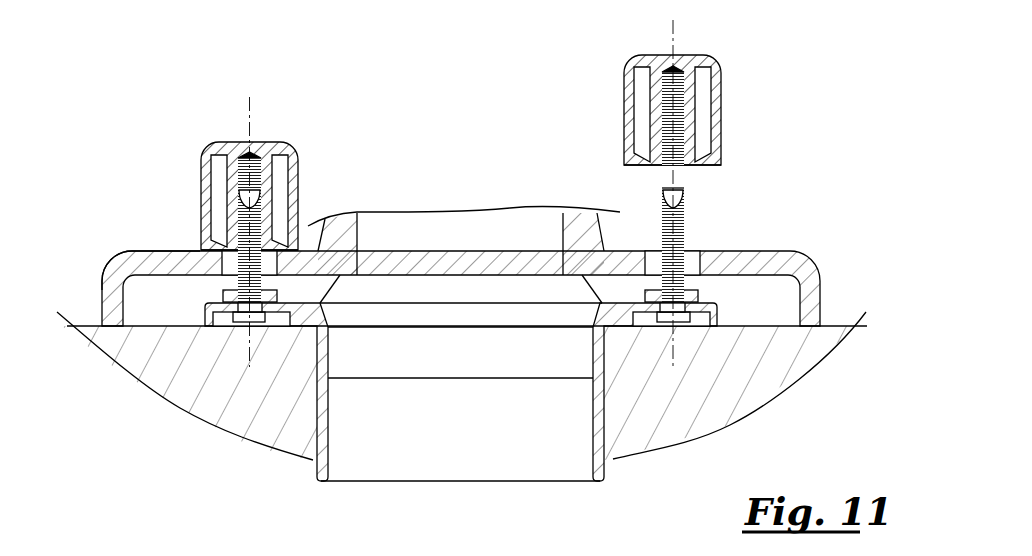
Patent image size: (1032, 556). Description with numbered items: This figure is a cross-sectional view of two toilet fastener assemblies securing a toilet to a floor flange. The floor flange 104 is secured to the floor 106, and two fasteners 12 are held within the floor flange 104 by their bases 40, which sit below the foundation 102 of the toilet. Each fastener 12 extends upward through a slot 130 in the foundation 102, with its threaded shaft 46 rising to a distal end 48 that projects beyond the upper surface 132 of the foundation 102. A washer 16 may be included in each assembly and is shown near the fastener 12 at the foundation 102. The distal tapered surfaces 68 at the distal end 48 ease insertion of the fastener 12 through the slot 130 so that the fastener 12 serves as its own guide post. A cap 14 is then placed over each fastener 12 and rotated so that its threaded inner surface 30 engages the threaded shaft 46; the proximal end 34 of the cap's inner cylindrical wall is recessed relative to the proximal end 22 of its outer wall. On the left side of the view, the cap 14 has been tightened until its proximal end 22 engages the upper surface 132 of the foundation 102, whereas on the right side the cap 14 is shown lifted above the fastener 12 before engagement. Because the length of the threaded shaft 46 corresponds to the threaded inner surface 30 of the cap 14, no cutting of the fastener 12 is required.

The fastener 12 is at (683, 243).
The cap 14 is at (228, 148).
The washer 16 is at (223, 297).
The proximal end 22 is at (722, 168).
The threaded inner surface 30 is at (680, 102).
The proximal end of inner cylindrical wall 34 is at (657, 163).
The base 40 is at (237, 320).
The threaded shaft 46 is at (663, 241).
The distal end 48 is at (238, 213).
The distal tapered surface 68 is at (260, 193).
The foundation 102 is at (810, 275).
The floor flange 104 is at (720, 313).
The floor 106 is at (802, 368).
The slot 130 is at (238, 267).
The upper surface 132 is at (143, 250).